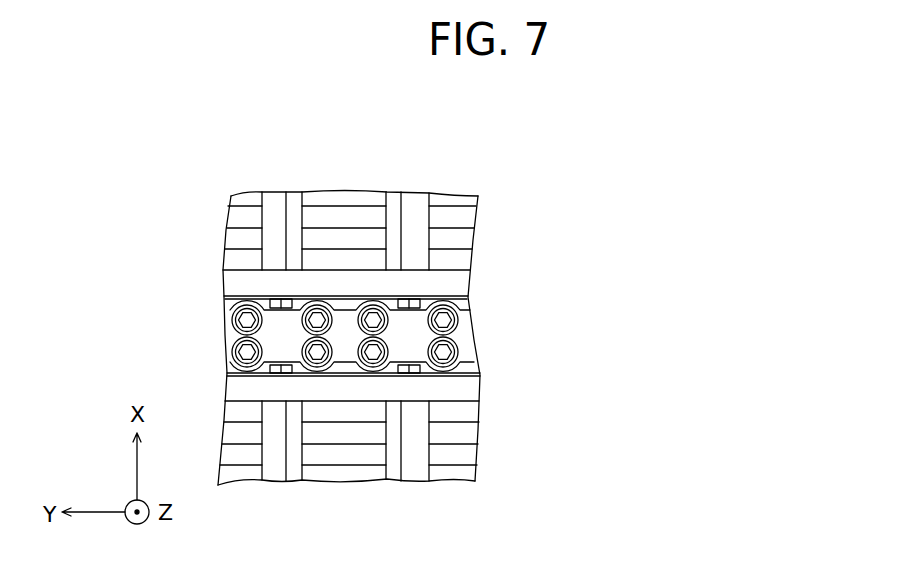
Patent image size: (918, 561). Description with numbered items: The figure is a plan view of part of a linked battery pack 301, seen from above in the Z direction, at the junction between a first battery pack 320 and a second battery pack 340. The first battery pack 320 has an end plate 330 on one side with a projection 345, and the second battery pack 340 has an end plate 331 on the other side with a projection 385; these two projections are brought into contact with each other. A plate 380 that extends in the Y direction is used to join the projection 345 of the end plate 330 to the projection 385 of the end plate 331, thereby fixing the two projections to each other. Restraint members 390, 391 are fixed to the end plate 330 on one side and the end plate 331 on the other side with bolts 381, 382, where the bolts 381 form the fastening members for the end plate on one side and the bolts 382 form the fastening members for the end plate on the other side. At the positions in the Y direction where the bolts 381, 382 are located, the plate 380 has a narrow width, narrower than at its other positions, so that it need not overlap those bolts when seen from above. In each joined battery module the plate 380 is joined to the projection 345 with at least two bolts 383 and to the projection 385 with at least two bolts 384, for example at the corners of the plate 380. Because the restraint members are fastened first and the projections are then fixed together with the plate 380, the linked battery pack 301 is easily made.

The linked battery pack 301 is at (471, 181).
The second battery pack 340 is at (475, 223).
The end plate on the other side 331 is at (362, 278).
The restraint member 391 is at (277, 240).
The projection 385 is at (302, 298).
The plate 380 is at (462, 335).
The bolt 384 is at (250, 318).
The bolt 383 is at (445, 352).
The bolt 382 is at (277, 299).
The bolt 381 is at (265, 368).
The projection 345 is at (298, 378).
The end plate on one side 330 is at (360, 395).
The first battery pack 320 is at (486, 455).
The restraint member 390 is at (268, 453).